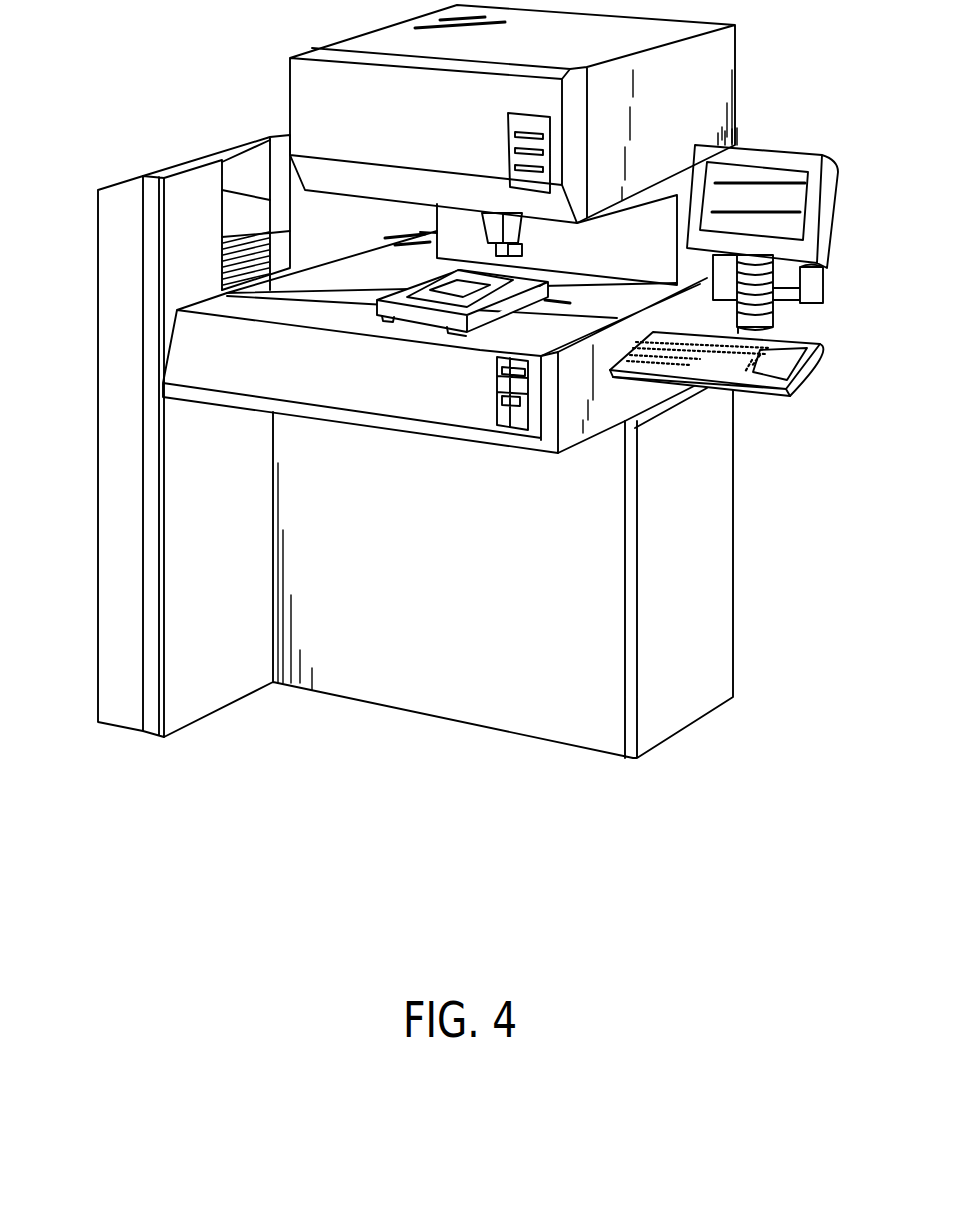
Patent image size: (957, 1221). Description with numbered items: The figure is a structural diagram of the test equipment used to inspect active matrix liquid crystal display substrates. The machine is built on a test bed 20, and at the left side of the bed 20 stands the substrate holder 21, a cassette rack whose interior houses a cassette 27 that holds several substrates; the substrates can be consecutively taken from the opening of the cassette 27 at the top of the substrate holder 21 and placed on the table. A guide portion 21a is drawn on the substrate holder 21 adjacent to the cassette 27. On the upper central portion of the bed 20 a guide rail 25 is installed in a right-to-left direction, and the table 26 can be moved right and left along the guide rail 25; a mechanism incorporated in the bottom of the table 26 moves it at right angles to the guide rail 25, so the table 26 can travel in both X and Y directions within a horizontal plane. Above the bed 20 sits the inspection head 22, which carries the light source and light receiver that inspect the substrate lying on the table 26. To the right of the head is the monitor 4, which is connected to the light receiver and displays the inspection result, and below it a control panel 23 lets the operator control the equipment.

The monitor 4 is at (826, 222).
The test bed 20 is at (341, 315).
The substrate holder (cassette rack) 21 is at (127, 525).
The slide guide of column 21a is at (253, 212).
The inspection head 22 is at (710, 87).
The control panel 23 is at (829, 370).
The guide rail 25 is at (351, 296).
The table 26 is at (426, 322).
The cassette 27 is at (233, 244).